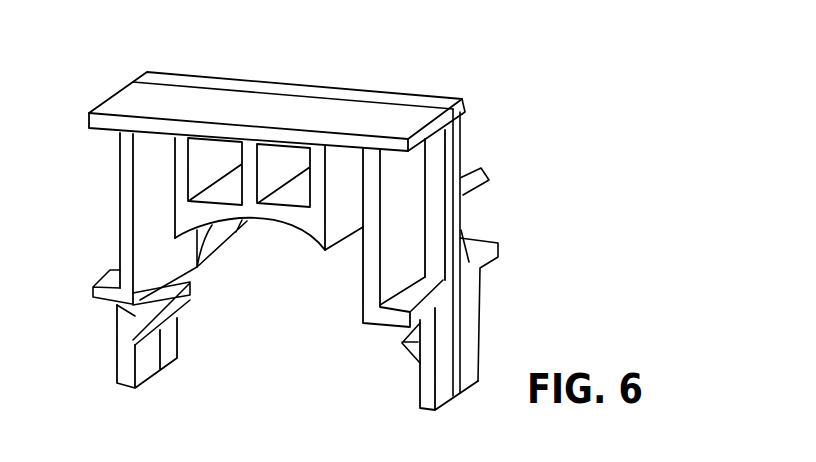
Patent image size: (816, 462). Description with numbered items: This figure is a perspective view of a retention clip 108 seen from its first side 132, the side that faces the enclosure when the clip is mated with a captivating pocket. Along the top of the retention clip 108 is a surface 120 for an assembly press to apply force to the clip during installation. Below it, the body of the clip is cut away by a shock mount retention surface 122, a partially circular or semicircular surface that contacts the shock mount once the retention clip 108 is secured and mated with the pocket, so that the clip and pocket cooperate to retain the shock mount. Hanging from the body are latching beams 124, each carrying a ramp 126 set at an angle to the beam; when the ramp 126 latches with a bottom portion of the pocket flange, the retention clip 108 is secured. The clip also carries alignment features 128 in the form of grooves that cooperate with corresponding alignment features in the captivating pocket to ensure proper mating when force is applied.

The retention clip 108 is at (465, 80).
The surface 120 is at (352, 118).
The shock mount retention surface 122 is at (282, 232).
The latching beam 124 is at (153, 355).
The ramp 126 is at (185, 303).
The alignment feature 128 is at (160, 243).
The first side 132 is at (123, 157).